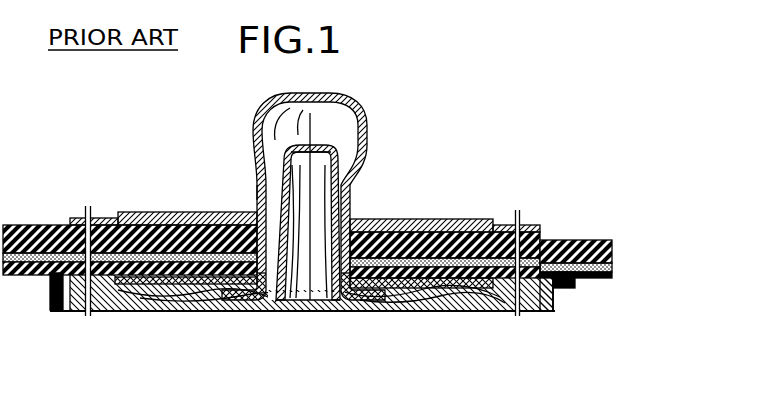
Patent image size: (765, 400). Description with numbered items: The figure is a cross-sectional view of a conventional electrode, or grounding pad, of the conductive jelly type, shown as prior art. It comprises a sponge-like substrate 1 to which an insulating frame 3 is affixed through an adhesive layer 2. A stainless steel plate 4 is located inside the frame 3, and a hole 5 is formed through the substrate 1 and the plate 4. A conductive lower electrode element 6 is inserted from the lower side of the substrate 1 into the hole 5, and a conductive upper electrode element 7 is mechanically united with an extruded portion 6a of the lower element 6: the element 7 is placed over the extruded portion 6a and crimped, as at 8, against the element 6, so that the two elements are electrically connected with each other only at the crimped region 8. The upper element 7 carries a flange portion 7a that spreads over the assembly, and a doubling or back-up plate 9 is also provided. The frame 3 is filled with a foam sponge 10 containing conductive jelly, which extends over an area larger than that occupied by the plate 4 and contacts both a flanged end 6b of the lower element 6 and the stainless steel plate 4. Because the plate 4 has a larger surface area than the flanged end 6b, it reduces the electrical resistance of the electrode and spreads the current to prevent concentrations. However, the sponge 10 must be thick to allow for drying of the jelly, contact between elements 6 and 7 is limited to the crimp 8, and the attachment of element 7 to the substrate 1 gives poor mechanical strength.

The sponge-like substrate 1 is at (612, 256).
The adhesive layer 2 is at (580, 265).
The insulating frame 3 is at (63, 308).
The stainless steel plate 4 is at (213, 306).
The hole 5 is at (284, 301).
The conductive lower electrode element 6 is at (318, 304).
The extruded portion 6a is at (317, 150).
The flanged end 6b is at (440, 298).
The conductive upper electrode element 7 is at (353, 112).
The outer shell flange 7a is at (180, 212).
The crimped region 8 is at (257, 190).
The doubling or back-up plate 9 is at (134, 213).
The foam sponge 10 is at (180, 312).